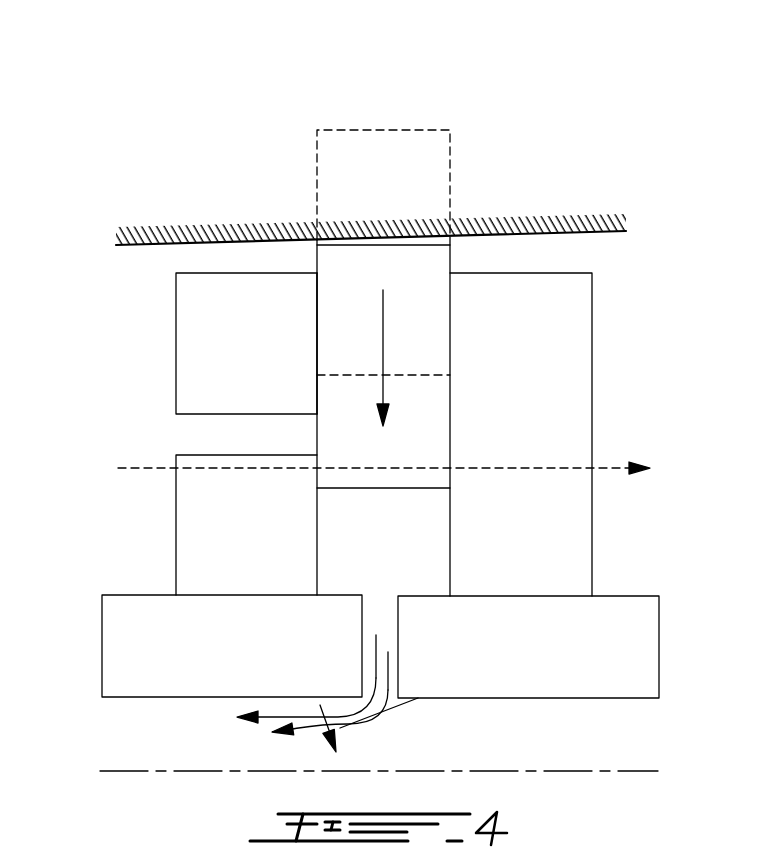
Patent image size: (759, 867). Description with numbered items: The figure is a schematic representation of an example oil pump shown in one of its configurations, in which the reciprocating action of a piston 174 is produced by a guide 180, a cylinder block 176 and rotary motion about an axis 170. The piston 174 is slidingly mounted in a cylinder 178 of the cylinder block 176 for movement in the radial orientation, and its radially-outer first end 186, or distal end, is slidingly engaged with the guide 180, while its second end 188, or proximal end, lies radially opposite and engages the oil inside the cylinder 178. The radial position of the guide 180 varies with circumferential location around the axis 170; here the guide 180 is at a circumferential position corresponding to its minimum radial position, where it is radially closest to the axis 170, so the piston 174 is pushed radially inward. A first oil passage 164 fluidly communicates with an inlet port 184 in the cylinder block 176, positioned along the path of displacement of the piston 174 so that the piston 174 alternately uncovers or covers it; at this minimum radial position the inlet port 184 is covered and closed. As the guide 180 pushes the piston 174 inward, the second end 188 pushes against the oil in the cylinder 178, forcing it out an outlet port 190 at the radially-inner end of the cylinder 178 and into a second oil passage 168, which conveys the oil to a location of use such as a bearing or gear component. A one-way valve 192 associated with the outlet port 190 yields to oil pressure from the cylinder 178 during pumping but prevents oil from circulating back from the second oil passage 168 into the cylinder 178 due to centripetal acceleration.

The first oil passage 164 is at (105, 338).
The second oil passage 168 is at (211, 760).
The axis 170 is at (143, 768).
The piston 174 is at (383, 268).
The cylinder block 176 is at (197, 313).
The cylinder 178 is at (317, 317).
The guide 180 is at (563, 232).
The inlet port 184 is at (302, 440).
The first end 186 is at (402, 245).
The second end 188 is at (420, 480).
The outlet port 190 is at (387, 653).
The one-way valve 192 is at (383, 717).